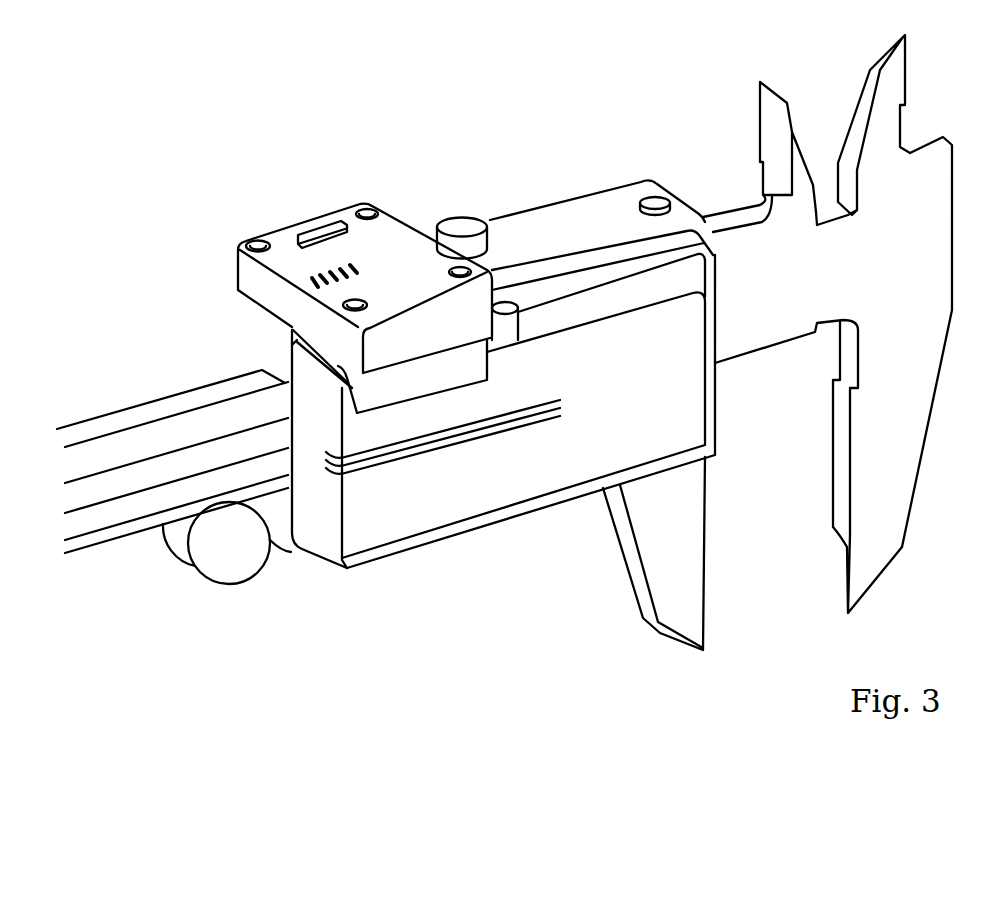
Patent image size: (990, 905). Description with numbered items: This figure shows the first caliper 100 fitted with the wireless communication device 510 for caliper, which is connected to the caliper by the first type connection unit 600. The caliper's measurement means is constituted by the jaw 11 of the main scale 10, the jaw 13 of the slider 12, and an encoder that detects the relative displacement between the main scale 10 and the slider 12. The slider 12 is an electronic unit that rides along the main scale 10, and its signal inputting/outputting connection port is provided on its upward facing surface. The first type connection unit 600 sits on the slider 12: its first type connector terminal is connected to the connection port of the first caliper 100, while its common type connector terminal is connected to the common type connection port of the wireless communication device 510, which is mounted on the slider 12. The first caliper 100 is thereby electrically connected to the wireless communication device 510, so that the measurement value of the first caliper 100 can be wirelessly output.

The first caliper 100 is at (176, 317).
The main scale 10 is at (140, 447).
The jaw of the main scale 11 is at (900, 510).
The slider 12 is at (579, 220).
The jaw of the slider 13 is at (772, 117).
The wireless communication device for caliper 510 is at (486, 503).
The first type connection unit 600 is at (417, 243).